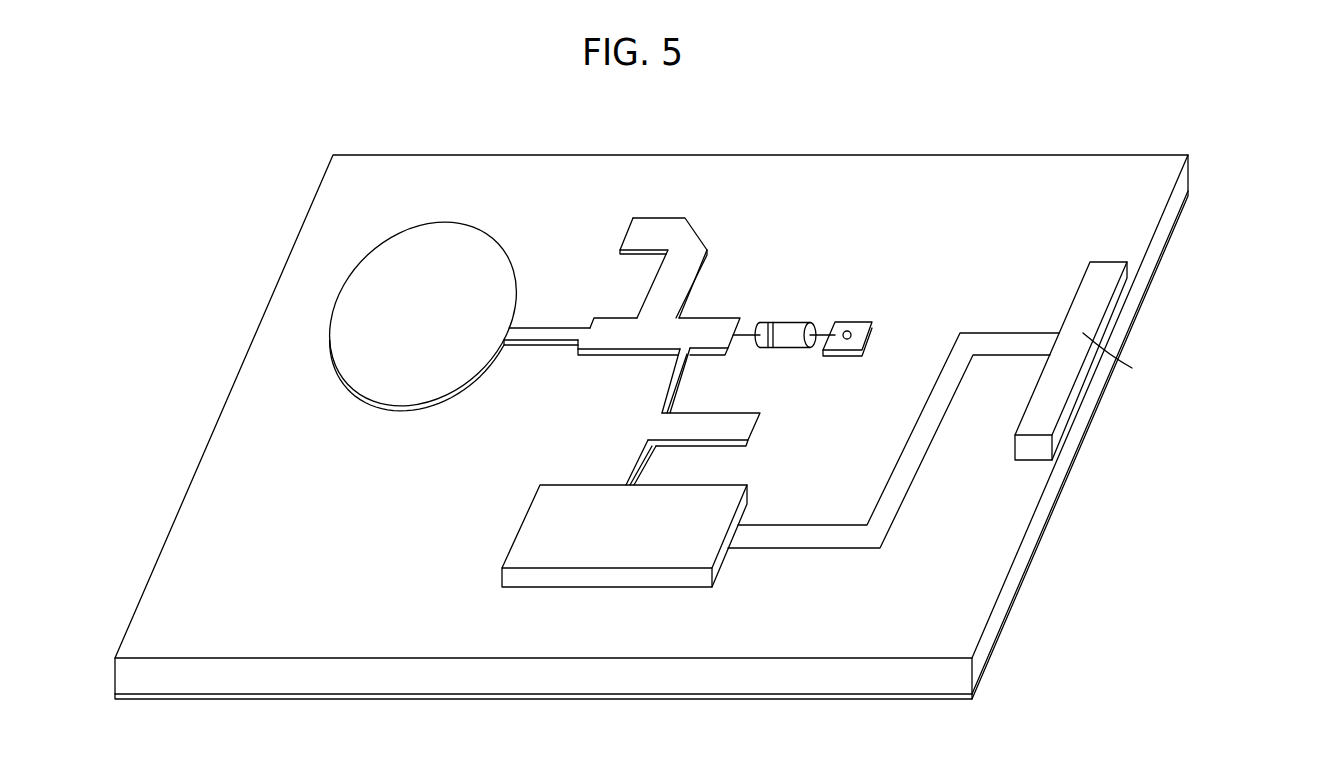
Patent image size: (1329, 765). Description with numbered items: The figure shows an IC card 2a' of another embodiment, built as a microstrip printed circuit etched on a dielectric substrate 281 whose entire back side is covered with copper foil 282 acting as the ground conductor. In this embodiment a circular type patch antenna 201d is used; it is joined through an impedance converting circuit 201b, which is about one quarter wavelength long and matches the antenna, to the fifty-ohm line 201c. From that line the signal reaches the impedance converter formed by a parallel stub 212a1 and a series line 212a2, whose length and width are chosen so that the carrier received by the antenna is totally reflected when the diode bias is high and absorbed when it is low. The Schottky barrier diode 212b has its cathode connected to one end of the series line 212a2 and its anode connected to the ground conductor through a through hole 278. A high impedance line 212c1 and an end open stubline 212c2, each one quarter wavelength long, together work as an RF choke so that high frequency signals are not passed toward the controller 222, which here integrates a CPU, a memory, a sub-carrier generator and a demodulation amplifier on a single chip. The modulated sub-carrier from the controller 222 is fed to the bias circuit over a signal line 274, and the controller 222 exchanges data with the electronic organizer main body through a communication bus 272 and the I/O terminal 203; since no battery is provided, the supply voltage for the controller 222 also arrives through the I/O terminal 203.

The IC card 2a' is at (651, 348).
The circular type patch antenna 201d is at (447, 243).
The impedance converting circuit 201b is at (542, 335).
The 50 Ω line 201c is at (605, 332).
The parallel stub 212a1 is at (692, 248).
The series line 212a2 is at (693, 330).
The Schottky barrier diode 212b is at (785, 348).
The high impedance line 212c1 is at (672, 391).
The end open stubline 212c2 is at (740, 428).
The signal line 274 is at (640, 462).
The through hole 278 is at (848, 330).
The communication bus 272 is at (973, 347).
The controller 222 is at (663, 550).
The I/O terminal 203 is at (1100, 273).
The dielectric substrate 281 is at (975, 593).
The copper foil 282 is at (975, 694).